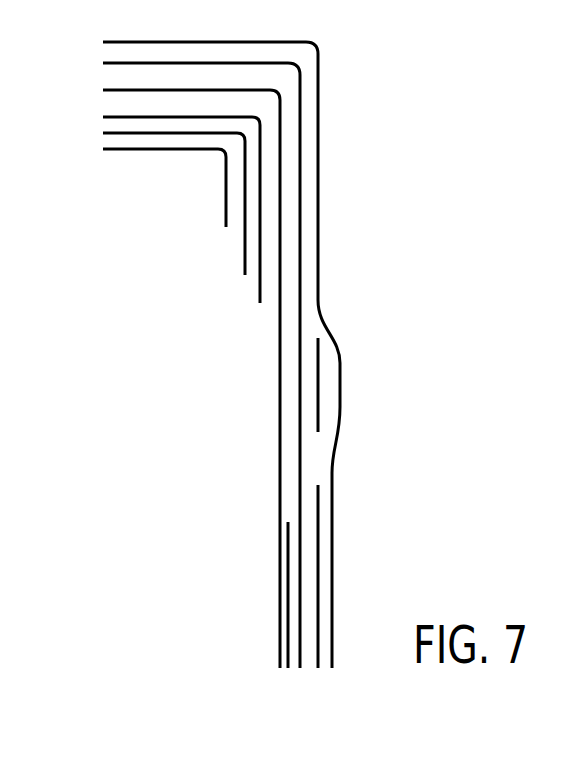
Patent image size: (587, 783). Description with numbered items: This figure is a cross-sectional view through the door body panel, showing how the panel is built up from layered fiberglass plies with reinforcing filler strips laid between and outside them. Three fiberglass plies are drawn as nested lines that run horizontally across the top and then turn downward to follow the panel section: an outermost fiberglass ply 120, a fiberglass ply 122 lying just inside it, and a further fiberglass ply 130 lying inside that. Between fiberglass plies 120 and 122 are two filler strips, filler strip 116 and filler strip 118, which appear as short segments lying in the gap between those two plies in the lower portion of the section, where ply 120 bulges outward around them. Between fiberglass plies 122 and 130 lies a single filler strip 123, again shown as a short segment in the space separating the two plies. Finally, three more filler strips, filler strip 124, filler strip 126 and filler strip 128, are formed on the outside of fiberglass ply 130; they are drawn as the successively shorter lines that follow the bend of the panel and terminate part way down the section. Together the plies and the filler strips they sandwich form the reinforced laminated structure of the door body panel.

The filler strip 116 is at (318, 390).
The filler strip 118 is at (318, 558).
The fiberglass ply 120 is at (320, 153).
The fiberglass ply 122 is at (300, 276).
The filler strip 123 is at (285, 573).
The filler strip 124 is at (108, 114).
The filler strip 126 is at (108, 133).
The filler strip 128 is at (108, 151).
The fiberglass ply 130 is at (279, 343).